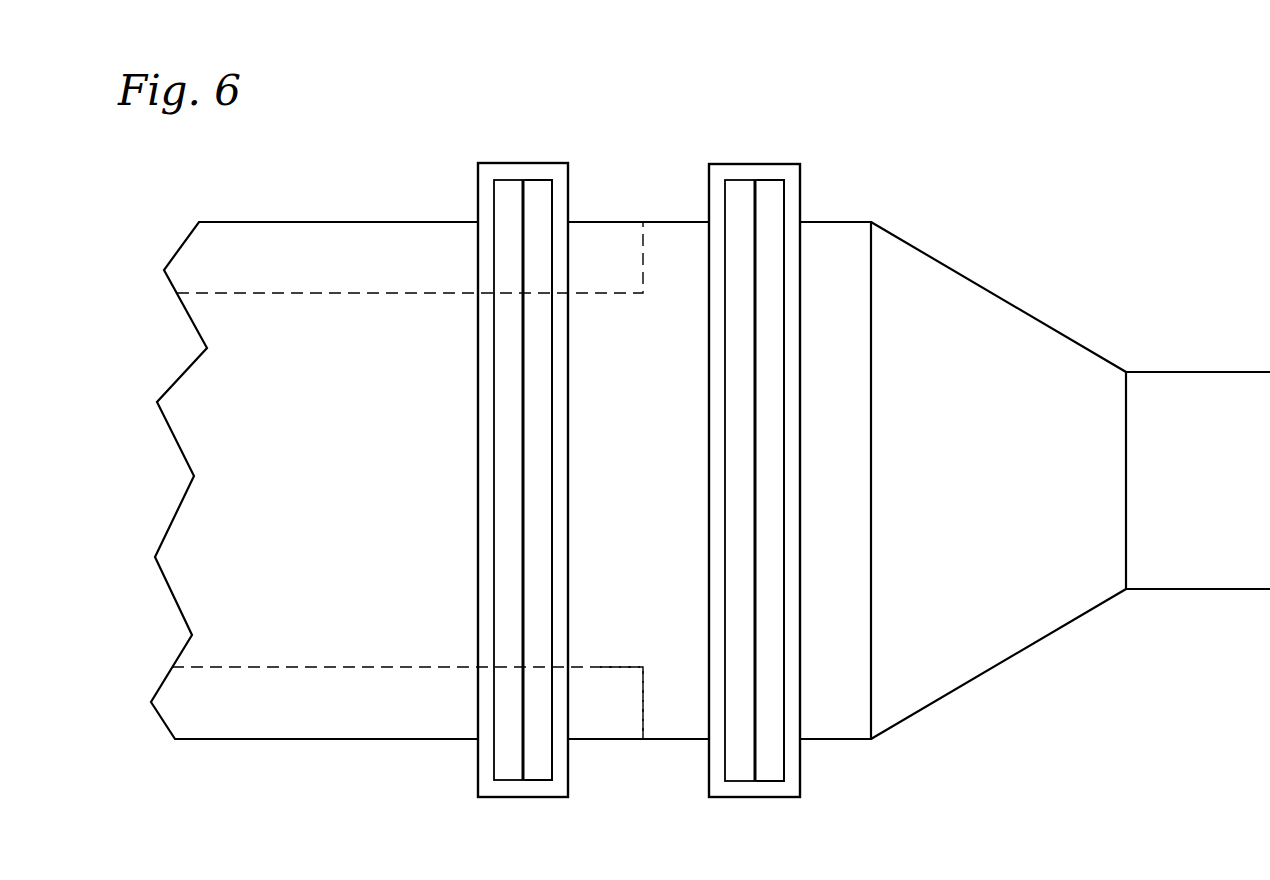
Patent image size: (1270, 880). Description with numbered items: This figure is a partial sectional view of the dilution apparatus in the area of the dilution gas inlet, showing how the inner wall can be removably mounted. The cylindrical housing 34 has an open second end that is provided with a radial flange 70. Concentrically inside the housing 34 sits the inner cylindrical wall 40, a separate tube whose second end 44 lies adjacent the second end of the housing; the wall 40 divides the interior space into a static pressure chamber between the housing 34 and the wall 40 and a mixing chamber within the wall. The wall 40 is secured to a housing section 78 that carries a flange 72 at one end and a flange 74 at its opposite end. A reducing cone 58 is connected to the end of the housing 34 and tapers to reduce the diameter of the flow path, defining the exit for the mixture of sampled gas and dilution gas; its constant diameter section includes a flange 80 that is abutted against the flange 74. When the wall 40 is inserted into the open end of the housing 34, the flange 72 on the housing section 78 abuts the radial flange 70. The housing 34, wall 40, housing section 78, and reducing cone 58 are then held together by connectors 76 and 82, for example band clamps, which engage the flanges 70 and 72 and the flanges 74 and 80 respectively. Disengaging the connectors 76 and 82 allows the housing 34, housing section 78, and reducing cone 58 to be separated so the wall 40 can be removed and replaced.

The cylindrical housing 34 is at (310, 222).
The inner cylindrical wall 40 is at (345, 667).
The second end of the cylindrical wall 44 is at (642, 705).
The reducing cone 58 is at (930, 290).
The radial flange 70 is at (514, 195).
The flange 72 is at (538, 193).
The flange 74 is at (745, 195).
The connector 76 is at (523, 162).
The housing section 78 is at (615, 220).
The flange 80 is at (770, 193).
The connector 82 is at (755, 162).